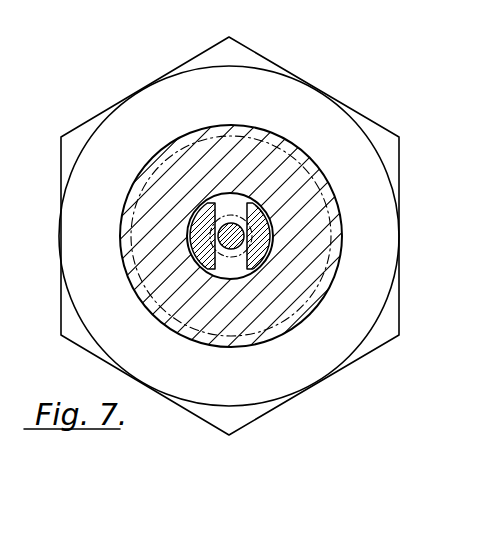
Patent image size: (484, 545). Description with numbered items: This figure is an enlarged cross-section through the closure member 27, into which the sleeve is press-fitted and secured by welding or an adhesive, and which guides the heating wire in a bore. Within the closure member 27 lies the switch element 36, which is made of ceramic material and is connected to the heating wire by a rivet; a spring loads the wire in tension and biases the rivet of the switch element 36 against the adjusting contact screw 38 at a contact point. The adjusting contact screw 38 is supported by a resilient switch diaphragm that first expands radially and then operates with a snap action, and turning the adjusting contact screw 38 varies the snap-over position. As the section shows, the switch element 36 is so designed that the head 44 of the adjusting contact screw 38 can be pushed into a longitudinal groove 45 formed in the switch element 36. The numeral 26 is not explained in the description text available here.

The hexagonal nut body 26 is at (262, 53).
The closure member 27 is at (328, 82).
The head 44 is at (238, 197).
The switch element 36 is at (249, 199).
The longitudinal groove 45 is at (226, 207).
The adjusting contact screw 38 is at (234, 235).